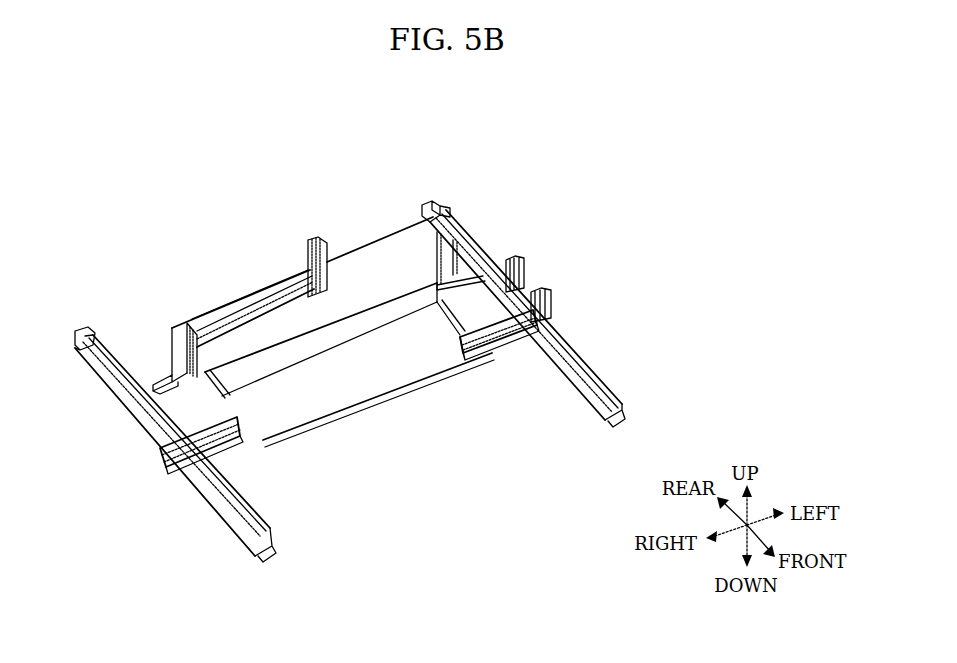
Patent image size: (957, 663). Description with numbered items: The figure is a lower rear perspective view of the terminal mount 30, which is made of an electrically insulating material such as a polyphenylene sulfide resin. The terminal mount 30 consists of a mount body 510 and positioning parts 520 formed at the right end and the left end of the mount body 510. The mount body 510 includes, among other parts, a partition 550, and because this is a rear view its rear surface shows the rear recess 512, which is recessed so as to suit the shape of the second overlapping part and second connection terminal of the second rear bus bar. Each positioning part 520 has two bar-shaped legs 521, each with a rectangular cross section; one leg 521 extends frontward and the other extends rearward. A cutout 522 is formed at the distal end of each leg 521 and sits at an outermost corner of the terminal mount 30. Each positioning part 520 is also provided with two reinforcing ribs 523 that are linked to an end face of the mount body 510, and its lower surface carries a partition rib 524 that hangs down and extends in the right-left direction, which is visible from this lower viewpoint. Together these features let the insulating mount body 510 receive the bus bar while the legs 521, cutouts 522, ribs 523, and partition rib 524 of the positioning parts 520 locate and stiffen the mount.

The terminal mount 30 is at (272, 220).
The mount body 510 is at (390, 408).
The rear recess 512 is at (268, 284).
The partition 550 is at (327, 244).
The positioning part 520 is at (570, 348).
The bar-shaped leg 521 is at (468, 246).
The cutout 522 is at (440, 205).
The reinforcing rib 523 is at (522, 262).
The partition rib 524 is at (512, 366).